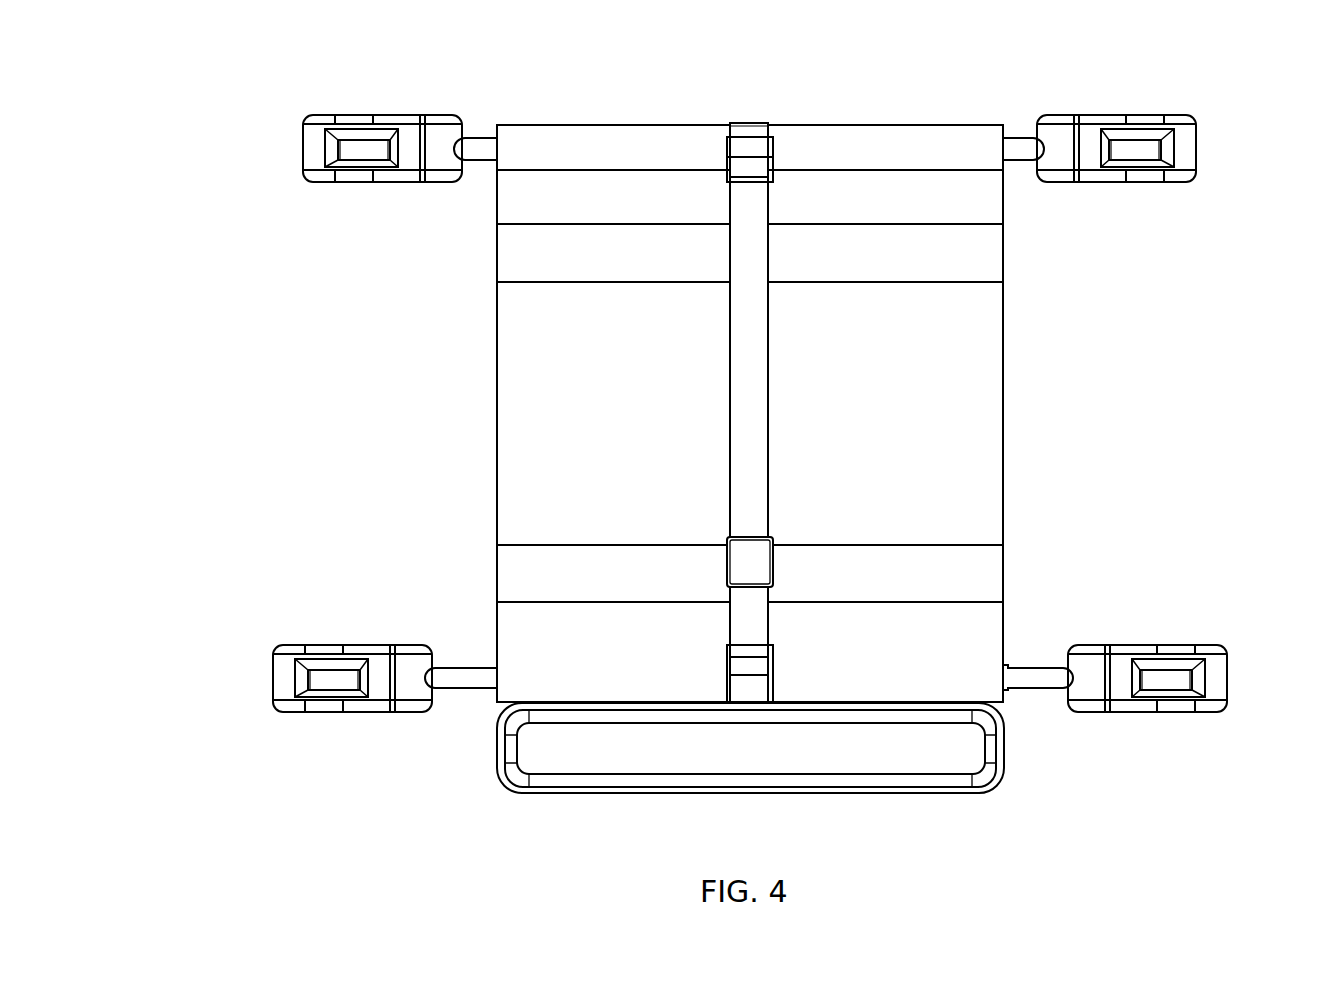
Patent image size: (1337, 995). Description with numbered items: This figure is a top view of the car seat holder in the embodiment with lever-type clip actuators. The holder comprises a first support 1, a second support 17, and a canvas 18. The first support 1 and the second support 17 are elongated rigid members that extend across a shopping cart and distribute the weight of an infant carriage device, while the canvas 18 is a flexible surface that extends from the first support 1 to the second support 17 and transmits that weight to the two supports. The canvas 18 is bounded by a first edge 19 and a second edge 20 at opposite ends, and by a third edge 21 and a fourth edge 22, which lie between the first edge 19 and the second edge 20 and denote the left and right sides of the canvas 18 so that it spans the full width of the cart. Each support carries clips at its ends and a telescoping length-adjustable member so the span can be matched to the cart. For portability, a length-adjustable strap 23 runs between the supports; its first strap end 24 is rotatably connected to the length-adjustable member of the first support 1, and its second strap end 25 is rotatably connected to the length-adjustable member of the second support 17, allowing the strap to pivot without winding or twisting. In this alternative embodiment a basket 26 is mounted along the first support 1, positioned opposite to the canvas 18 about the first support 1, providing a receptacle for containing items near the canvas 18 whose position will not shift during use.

The first support 1 is at (311, 628).
The second support 17 is at (337, 99).
The canvas 18 is at (753, 362).
The first edge 19 is at (828, 700).
The second edge 20 is at (857, 123).
The third edge 21 is at (1003, 421).
The fourth edge 22 is at (497, 423).
The length-adjustable strap 23 is at (748, 428).
The first strap end 24 is at (722, 621).
The second strap end 25 is at (778, 208).
The basket 26 is at (762, 760).